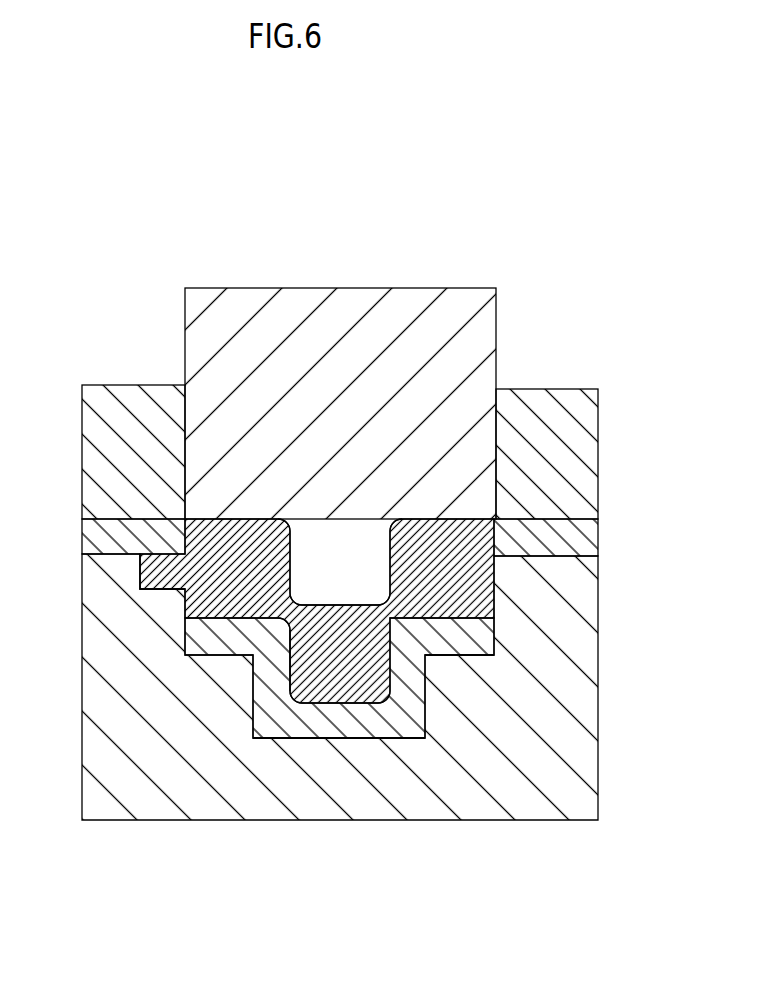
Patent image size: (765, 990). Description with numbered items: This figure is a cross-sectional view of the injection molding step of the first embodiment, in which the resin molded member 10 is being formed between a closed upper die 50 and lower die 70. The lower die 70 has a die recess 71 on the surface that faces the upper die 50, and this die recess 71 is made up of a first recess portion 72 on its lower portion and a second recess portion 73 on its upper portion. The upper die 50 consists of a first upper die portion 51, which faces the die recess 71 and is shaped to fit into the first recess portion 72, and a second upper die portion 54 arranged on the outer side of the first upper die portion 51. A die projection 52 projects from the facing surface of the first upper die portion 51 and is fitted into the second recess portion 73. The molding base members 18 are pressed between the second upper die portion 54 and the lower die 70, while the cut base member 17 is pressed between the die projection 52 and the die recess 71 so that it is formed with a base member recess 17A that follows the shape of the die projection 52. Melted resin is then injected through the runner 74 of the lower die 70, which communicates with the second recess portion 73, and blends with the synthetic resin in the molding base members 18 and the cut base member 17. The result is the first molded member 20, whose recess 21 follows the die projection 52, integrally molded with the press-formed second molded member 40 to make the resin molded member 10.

The resin molded member 10 is at (299, 568).
The cut base member 17 is at (287, 728).
The base member recess 17A is at (295, 668).
The molding base member 18 is at (127, 543).
The first molded member 20 is at (304, 537).
The recess 21 is at (295, 567).
The second molded member 40 is at (330, 778).
The upper die 50 is at (340, 385).
The first upper die portion 51 is at (223, 328).
The die projection 52 is at (357, 583).
The second upper die portion 54 is at (147, 410).
The lower die 70 is at (347, 734).
The die recess 71 is at (384, 780).
The first recess portion 72 is at (400, 738).
The second recess portion 73 is at (460, 655).
The runner 74 is at (152, 590).